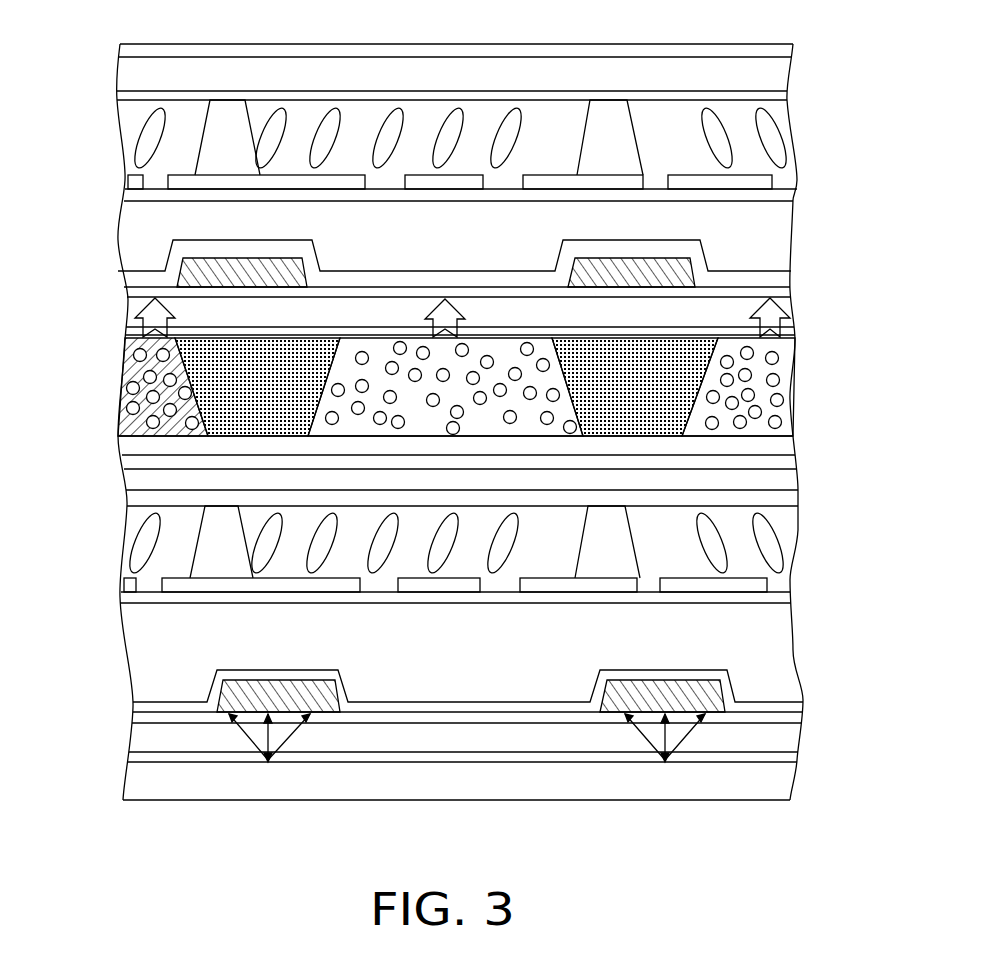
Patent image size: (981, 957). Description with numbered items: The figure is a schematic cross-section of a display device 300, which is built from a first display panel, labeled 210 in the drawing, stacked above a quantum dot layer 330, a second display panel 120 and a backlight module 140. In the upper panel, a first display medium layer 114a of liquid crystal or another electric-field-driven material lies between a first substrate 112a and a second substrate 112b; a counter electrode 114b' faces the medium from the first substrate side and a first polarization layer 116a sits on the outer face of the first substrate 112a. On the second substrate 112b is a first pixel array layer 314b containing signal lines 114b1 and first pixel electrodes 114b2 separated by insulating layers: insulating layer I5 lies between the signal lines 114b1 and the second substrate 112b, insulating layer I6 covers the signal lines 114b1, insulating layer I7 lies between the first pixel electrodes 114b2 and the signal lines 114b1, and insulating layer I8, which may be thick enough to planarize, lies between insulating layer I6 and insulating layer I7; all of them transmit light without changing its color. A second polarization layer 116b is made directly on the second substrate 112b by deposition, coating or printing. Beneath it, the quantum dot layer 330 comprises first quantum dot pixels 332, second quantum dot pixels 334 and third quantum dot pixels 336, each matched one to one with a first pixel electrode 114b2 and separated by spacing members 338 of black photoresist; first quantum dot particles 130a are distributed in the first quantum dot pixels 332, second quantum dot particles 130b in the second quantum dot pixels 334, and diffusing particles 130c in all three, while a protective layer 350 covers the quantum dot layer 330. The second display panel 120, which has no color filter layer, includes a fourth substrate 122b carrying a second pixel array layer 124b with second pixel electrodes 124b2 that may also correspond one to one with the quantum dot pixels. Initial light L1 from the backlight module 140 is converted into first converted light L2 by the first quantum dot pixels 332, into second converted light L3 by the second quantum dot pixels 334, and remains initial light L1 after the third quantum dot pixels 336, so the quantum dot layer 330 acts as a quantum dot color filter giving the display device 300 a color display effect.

The display device 300 is at (897, 841).
The first polarization layer 116a is at (128, 50).
The first substrate 112a is at (128, 72).
The counter electrode 114b' is at (421, 86).
The first display medium layer 114a is at (267, 143).
The first pixel electrodes 114b2 is at (133, 177).
The signal lines 114b1 is at (660, 220).
The first pixel array layer 314b is at (119, 177).
The display panel 210 is at (54, 2).
The insulating layer I7 is at (793, 240).
The insulating layer I8 is at (670, 265).
The insulating layer I6 is at (773, 278).
The insulating layer I5 is at (782, 292).
The second substrate 112b is at (130, 313).
The second polarization layer 116b is at (132, 332).
The first quantum dot pixels 332 is at (793, 310).
The initial light L1 is at (747, 309).
The first converted light L2 is at (747, 309).
The second converted light L3 is at (447, 337).
The first quantum dot particles 130a is at (118, 413).
The second quantum dot pixels 334 is at (550, 378).
The third quantum dot pixels 336 is at (767, 370).
The spacing members 338 is at (678, 415).
The quantum dot layer 330 is at (847, 300).
The diffusing particles 130c is at (118, 428).
The protective layer 350 is at (778, 445).
The second quantum dot particles 130b is at (783, 483).
The fourth substrate 122b is at (797, 490).
The second display panel 120 is at (114, 455).
The second pixel electrodes 124b2 is at (748, 587).
The second pixel array layer 124b is at (811, 577).
The backlight module 140 is at (135, 777).